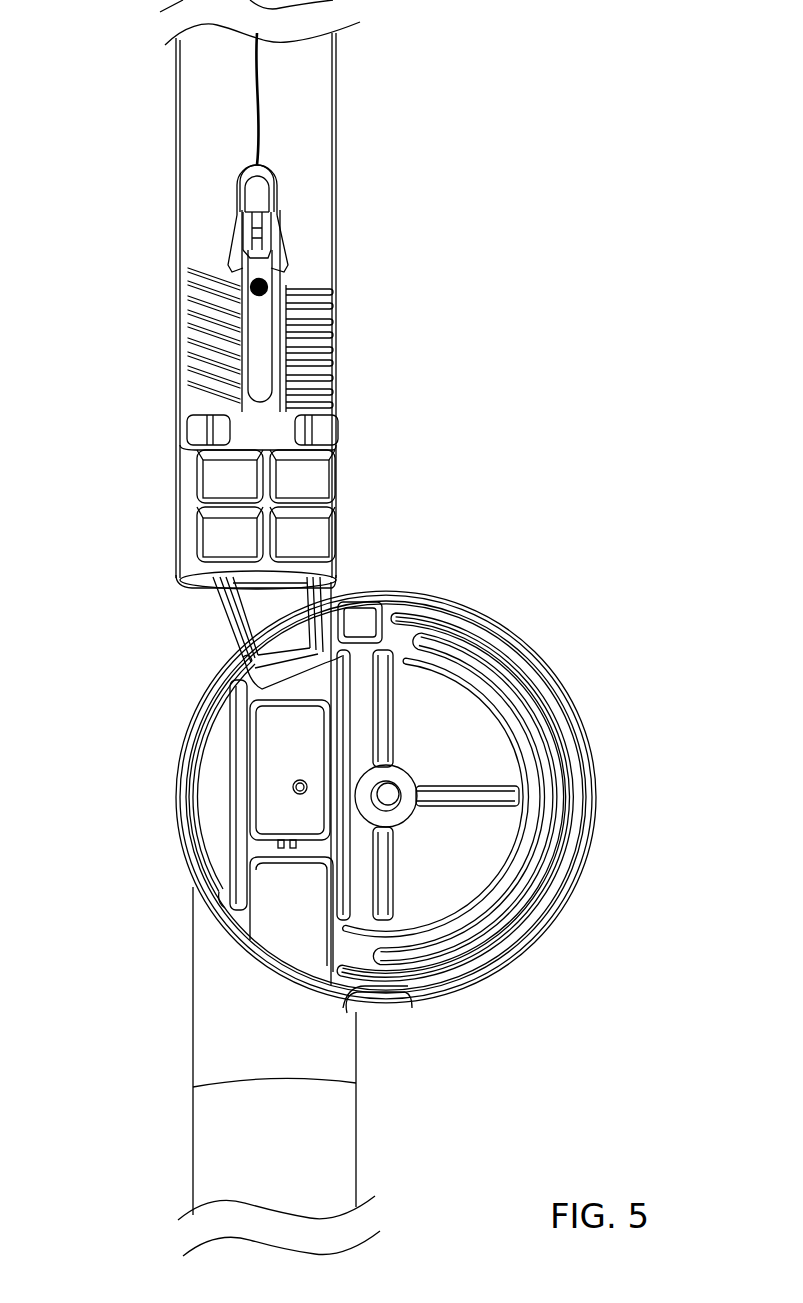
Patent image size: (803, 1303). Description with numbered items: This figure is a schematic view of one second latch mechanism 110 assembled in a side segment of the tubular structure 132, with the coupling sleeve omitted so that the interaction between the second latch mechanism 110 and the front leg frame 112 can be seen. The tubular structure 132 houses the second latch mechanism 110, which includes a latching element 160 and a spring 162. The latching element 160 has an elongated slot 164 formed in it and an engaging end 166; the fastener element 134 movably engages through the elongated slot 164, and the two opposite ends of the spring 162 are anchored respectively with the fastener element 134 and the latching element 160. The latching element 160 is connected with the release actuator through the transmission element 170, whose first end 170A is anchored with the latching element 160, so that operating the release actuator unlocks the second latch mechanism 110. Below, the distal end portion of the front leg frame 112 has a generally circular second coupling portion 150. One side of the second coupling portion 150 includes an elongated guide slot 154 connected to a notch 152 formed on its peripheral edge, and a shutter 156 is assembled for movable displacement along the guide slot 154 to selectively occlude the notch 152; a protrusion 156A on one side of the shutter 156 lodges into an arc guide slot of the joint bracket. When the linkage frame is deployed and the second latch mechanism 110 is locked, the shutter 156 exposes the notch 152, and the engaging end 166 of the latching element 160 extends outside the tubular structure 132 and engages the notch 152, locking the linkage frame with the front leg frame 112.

The second latch mechanism 110 is at (325, 198).
The front leg frame 112 is at (355, 1133).
The tubular structure 132 is at (337, 96).
The fastener element 134 is at (250, 282).
The second coupling portion 150 is at (402, 1008).
The notch 152 is at (205, 657).
The guide slot 154 is at (240, 855).
The shutter 156 is at (270, 739).
The protrusion 156A is at (285, 780).
The latching element 160 is at (191, 475).
The spring 162 is at (318, 338).
The elongated slot 164 is at (263, 262).
The engaging end 166 is at (268, 595).
The transmission element 170 is at (253, 63).
The first end 170A is at (253, 191).